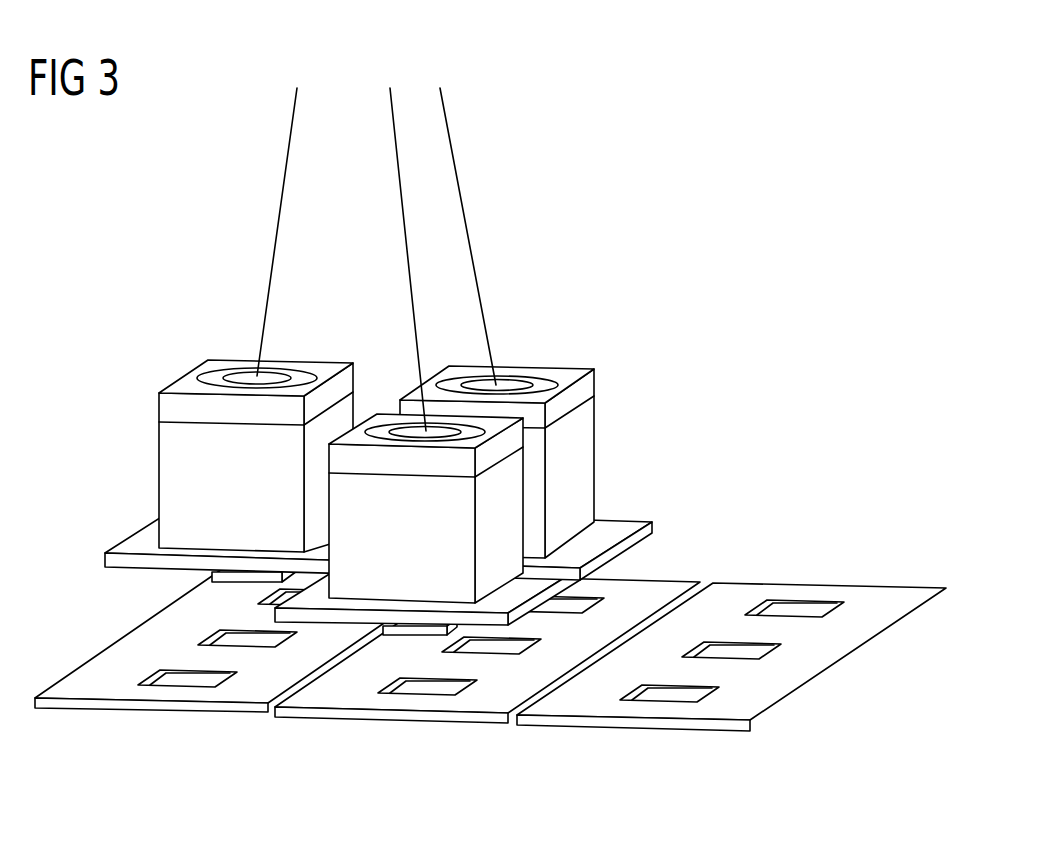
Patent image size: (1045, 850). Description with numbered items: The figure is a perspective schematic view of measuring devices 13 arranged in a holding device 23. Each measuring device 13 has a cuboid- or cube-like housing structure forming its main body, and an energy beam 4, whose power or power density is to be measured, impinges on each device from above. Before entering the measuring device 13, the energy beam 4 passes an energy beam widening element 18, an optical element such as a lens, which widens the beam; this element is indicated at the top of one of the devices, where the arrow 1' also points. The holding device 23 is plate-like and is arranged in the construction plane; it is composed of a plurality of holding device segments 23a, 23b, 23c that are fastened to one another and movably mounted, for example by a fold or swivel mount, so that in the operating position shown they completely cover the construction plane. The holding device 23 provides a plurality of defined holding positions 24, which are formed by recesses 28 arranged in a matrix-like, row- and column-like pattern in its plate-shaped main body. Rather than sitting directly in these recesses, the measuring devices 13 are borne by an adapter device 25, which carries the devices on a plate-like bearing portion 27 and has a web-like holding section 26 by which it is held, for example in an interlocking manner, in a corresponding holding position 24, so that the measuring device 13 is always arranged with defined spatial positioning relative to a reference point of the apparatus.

The energy beam 4 is at (458, 193).
The measuring device 13 is at (408, 428).
The energy beam widening element 18 is at (482, 385).
The container 1' is at (497, 425).
The holding device 23 is at (490, 580).
The holding device segment 23a is at (85, 683).
The holding device segment 23b is at (667, 593).
The holding device segment 23c is at (731, 621).
The holding position 24 is at (720, 640).
The adapter device 25 is at (338, 640).
The holding section 26 is at (420, 630).
The carrier plate 27 is at (620, 527).
The recess 28 is at (790, 608).